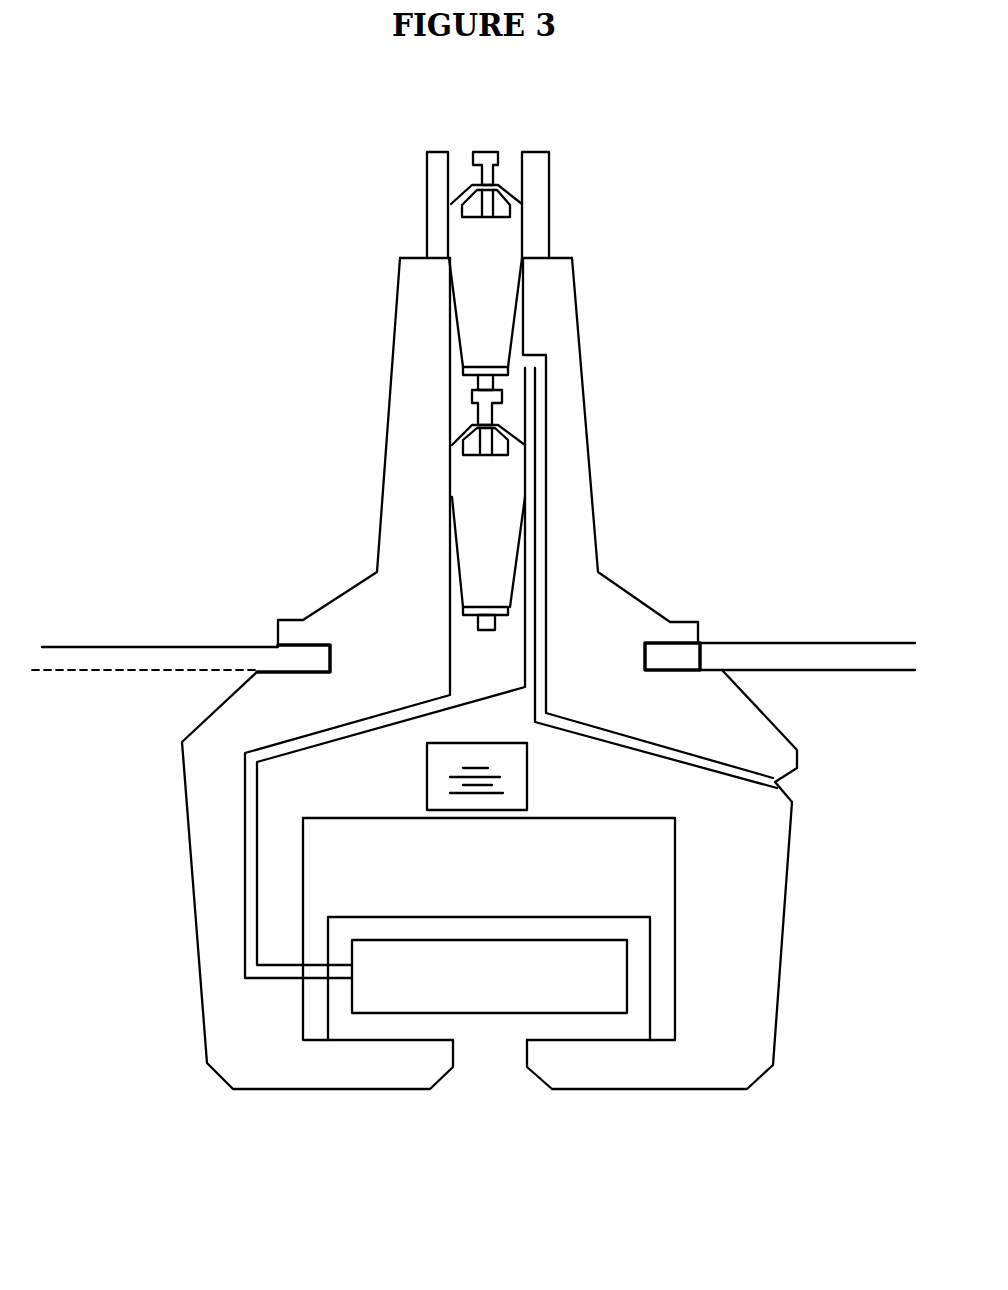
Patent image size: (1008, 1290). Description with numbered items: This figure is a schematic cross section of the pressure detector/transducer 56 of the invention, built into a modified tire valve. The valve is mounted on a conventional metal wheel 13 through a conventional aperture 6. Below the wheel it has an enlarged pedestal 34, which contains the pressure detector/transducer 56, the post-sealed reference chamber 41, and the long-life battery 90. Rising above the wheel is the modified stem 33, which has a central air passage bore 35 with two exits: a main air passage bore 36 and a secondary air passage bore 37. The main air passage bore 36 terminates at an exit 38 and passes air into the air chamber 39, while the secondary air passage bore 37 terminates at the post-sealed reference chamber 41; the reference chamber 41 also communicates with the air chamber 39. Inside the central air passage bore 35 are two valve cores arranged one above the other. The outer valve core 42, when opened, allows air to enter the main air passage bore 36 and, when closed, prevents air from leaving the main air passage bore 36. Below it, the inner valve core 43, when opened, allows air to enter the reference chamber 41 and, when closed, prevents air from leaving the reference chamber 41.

The aperture 6 is at (635, 618).
The metal wheel 13 is at (228, 658).
The modified stem 33 is at (417, 333).
The enlarged pedestal 34 is at (258, 718).
The central air passage bore 35 is at (463, 175).
The main air passage bore 36 is at (536, 362).
The secondary air passage bore 37 is at (477, 685).
The exit 38 is at (800, 783).
The air chamber 39 is at (482, 1083).
The post-sealed reference chamber 41 is at (642, 992).
The outer valve core 42 is at (497, 290).
The inner valve core 43 is at (486, 488).
The pressure detector/transducer 56 is at (698, 872).
The long-life battery 90 is at (518, 779).